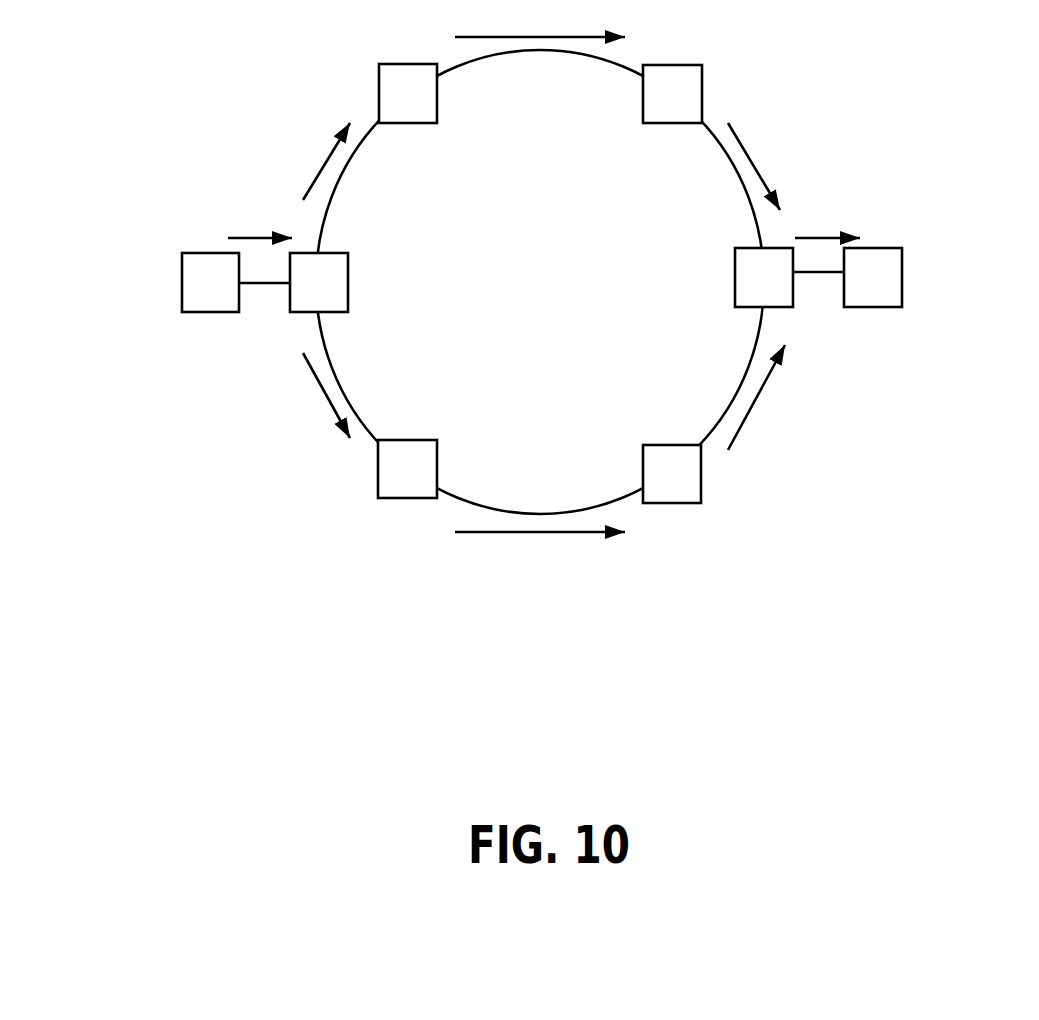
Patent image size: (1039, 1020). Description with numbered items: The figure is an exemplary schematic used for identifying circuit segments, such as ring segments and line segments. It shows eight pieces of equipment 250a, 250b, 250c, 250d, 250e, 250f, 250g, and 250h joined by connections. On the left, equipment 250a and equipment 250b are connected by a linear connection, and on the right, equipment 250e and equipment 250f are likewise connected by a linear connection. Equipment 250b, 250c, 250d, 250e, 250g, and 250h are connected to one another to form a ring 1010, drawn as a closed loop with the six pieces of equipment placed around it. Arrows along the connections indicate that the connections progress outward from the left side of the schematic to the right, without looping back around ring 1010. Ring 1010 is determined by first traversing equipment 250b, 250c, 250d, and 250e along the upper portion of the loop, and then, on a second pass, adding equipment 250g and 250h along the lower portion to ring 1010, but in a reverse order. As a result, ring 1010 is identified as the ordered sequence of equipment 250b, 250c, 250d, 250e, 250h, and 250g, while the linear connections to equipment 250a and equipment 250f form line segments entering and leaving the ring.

The ring 1010 is at (569, 182).
The equipment 250a is at (182, 281).
The equipment 250b is at (348, 280).
The equipment 250c is at (379, 88).
The equipment 250d is at (702, 85).
The equipment 250e is at (735, 276).
The equipment 250f is at (902, 274).
The equipment 250g is at (378, 466).
The equipment 250h is at (701, 474).